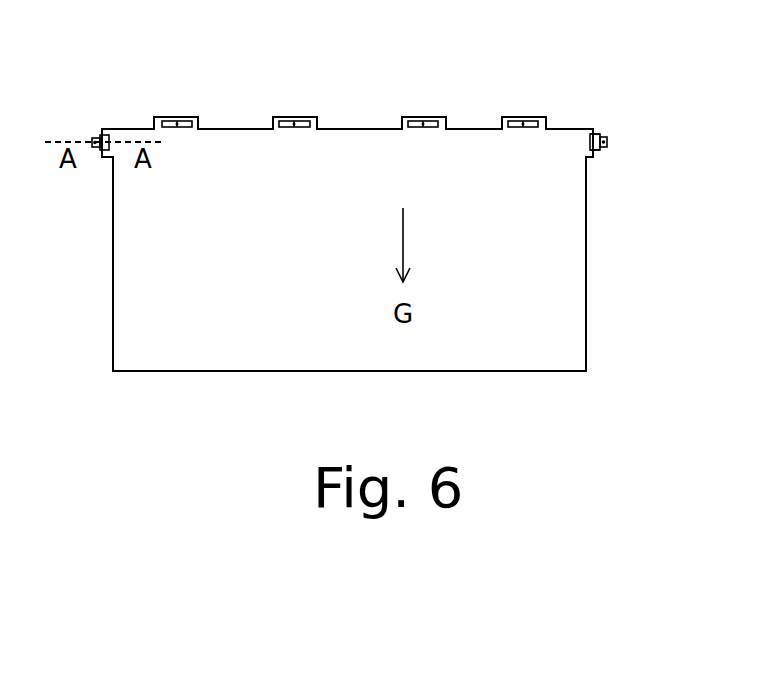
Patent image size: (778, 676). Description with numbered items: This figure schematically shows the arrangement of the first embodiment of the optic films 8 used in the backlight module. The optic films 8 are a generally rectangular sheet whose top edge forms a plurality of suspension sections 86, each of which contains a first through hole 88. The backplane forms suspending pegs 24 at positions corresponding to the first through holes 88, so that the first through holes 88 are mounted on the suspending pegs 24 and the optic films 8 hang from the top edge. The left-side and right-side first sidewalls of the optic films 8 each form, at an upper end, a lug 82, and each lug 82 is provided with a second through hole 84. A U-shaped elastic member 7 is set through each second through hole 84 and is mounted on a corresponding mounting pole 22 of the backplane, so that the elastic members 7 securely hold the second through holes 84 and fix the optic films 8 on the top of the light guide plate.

The optic films 8 is at (216, 273).
The suspending pegs 24 is at (423, 126).
The suspension sections 86 is at (273, 120).
The first through hole 88 is at (289, 125).
The lug 82 is at (594, 132).
The second through hole 84 is at (598, 133).
The mounting poles 22 is at (605, 143).
The elastic members 7 is at (598, 148).